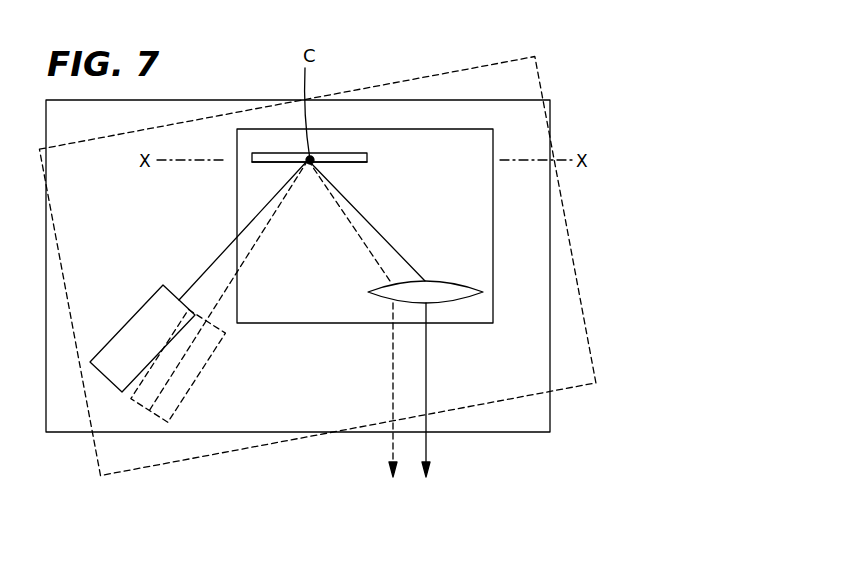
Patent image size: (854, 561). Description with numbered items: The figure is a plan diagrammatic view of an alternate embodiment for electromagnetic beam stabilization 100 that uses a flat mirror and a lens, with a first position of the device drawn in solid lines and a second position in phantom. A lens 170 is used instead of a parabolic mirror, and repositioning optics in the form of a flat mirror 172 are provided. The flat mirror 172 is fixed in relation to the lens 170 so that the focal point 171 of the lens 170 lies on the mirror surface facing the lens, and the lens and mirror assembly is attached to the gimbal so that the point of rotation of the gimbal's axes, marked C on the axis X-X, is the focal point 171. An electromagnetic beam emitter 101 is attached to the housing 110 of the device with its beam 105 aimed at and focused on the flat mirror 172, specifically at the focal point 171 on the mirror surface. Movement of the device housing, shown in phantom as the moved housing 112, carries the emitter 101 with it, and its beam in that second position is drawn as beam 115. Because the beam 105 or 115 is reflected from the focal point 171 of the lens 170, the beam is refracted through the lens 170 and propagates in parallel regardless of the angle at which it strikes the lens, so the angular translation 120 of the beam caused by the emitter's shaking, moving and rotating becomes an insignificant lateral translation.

The electromagnetic beam stabilization embodiment 100 is at (620, 86).
The electromagnetic beam emitter 101 is at (118, 332).
The beam 105 is at (197, 280).
The housing 110 is at (551, 419).
The moved device housing 112 is at (590, 353).
The beam in second position 115 is at (391, 378).
The angular movement 120 is at (494, 188).
The lens 170 is at (455, 282).
The focal point of the lens 171 is at (318, 152).
The flat mirror 172 is at (358, 162).